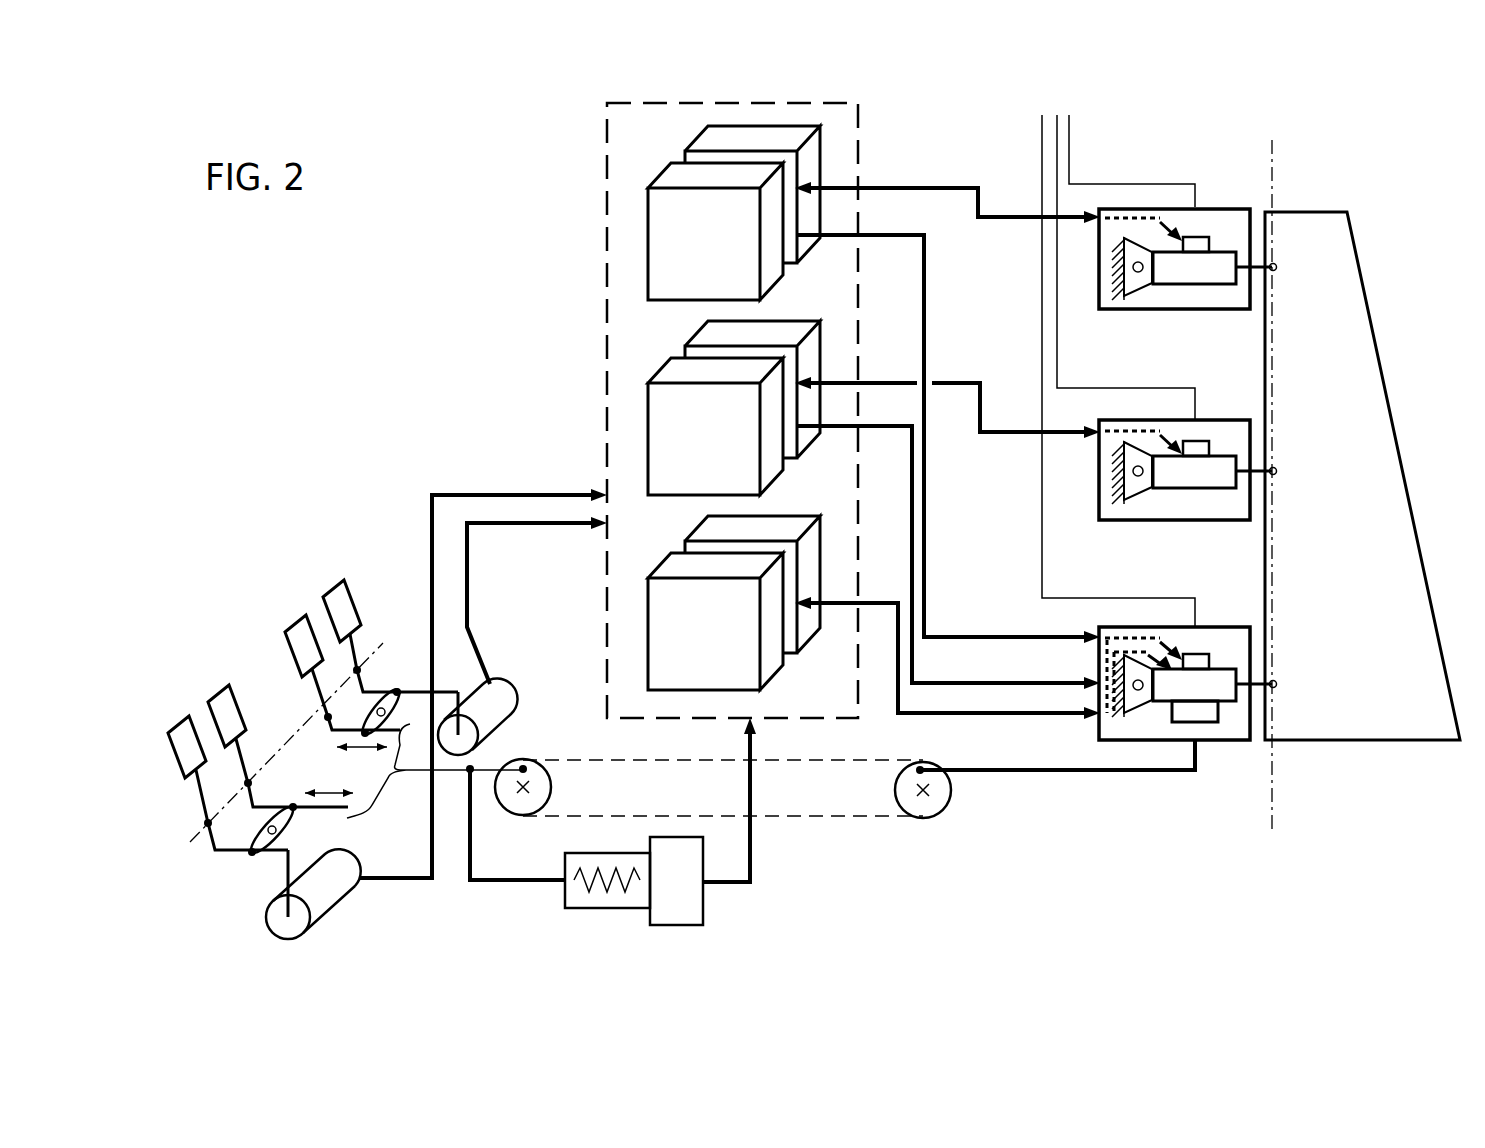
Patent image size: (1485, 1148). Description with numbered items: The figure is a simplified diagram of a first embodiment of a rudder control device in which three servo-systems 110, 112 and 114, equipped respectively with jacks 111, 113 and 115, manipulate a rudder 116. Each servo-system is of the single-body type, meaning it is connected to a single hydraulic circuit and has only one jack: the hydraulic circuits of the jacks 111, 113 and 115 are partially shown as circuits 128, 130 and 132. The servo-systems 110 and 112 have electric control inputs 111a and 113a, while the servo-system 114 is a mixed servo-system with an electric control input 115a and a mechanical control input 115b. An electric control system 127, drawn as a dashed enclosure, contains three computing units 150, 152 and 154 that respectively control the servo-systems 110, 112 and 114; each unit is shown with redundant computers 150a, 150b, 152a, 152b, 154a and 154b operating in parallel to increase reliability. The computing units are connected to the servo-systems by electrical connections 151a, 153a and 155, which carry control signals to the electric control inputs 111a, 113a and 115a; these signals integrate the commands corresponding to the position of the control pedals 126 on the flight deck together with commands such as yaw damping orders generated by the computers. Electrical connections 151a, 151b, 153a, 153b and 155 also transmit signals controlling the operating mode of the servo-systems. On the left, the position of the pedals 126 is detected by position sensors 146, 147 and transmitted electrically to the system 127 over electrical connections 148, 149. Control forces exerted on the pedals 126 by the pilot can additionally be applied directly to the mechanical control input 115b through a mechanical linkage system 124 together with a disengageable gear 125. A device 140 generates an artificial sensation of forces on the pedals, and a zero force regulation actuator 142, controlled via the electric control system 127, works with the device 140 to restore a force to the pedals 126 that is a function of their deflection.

The servo-system 110 is at (1150, 310).
The jack 111 is at (1220, 272).
The electric control input 111a is at (1205, 242).
The servo-system 112 is at (1150, 522).
The jack 113 is at (1193, 489).
The electric control input 113a is at (1205, 452).
The mixed servo-system 114 is at (1148, 744).
The jack 115 is at (1232, 690).
The electric control input 115a is at (1210, 662).
The mechanical control input 115b is at (1205, 724).
The rudder 116 is at (1335, 268).
The mechanical linkage system 124 is at (882, 830).
The disengageable gear 125 is at (1072, 772).
The control pedals 126 is at (245, 686).
The electric control system 127 is at (606, 290).
The hydraulic circuit 128 is at (1070, 145).
The hydraulic circuit 130 is at (1058, 120).
The hydraulic circuit 132 is at (1042, 118).
The artificial force sensation device 140 is at (570, 905).
The zero force regulation actuator 142 is at (705, 912).
The position sensor 146 is at (270, 918).
The position sensor 147 is at (495, 712).
The electrical connection 148 is at (432, 492).
The electrical connection 149 is at (467, 522).
The computing unit 150 is at (656, 201).
The computer 150a is at (660, 228).
The computer 150b is at (690, 135).
The electrical connection 151a is at (868, 188).
The electrical connection 151b is at (926, 290).
The computing unit 152 is at (658, 408).
The computer 152a is at (665, 432).
The computer 152b is at (690, 345).
The electrical connection 153a is at (985, 355).
The electrical connection 153b is at (920, 500).
The computing unit 154 is at (671, 603).
The computer 154a is at (708, 530).
The computer 154b is at (662, 630).
The electrical connection 155 is at (935, 722).